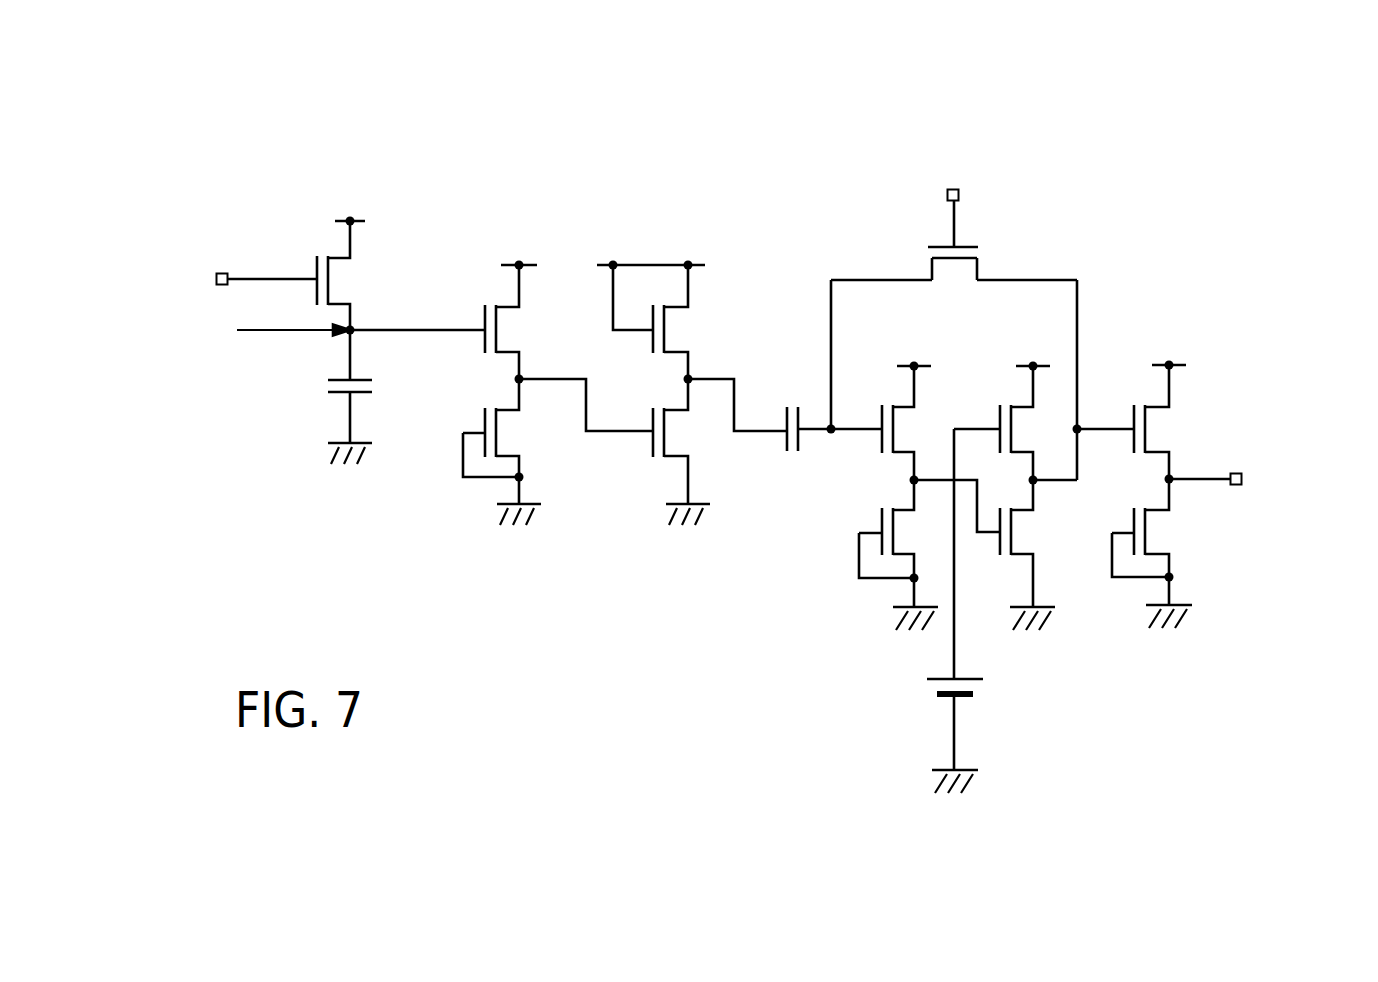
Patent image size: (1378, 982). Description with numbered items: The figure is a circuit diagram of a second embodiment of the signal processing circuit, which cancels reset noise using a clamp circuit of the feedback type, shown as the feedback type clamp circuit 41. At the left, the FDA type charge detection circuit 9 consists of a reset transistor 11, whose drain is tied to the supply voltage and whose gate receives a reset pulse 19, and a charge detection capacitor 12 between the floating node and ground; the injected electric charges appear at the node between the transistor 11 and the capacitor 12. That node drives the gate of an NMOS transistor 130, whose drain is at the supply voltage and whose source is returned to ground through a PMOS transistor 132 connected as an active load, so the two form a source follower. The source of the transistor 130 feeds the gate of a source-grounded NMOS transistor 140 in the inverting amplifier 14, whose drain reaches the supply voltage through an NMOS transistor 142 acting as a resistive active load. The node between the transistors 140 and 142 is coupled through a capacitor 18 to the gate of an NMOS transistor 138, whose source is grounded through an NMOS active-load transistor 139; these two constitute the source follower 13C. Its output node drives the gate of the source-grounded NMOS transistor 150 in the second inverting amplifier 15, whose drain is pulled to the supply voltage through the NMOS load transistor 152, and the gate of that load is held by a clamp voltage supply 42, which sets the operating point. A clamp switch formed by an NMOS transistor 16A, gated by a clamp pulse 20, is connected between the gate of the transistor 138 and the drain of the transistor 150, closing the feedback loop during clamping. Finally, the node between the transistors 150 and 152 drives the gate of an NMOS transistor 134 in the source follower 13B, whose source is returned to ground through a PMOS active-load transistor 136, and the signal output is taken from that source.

The charge detection circuit 9 is at (518, 177).
The transistor 11 is at (350, 292).
The capacitor 12 is at (365, 395).
The source follower 13B is at (1163, 353).
The source follower 13C is at (898, 364).
The inverting amplifier 14 is at (733, 177).
The inverting amplifier 15 is at (1017, 562).
The NMOS transistor 16A is at (943, 270).
The capacitor 18 is at (795, 400).
The reset pulse input terminal 19 is at (218, 275).
The clamp pulse 20 is at (962, 193).
The feedback type clamp circuit 41 is at (1124, 909).
The clamp voltage supply 42 is at (963, 698).
The NMOS transistor 130 is at (511, 335).
The PMOS transistor 132 is at (518, 432).
The NMOS transistor 134 is at (1165, 435).
The PMOS transistor 136 is at (1165, 537).
The NMOS transistor 138 is at (903, 437).
The NMOS transistor 139 is at (888, 508).
The NMOS transistor 140 is at (687, 432).
The NMOS transistor 142 is at (678, 335).
The NMOS transistor 150 is at (1022, 538).
The NMOS load transistor 152 is at (1022, 400).